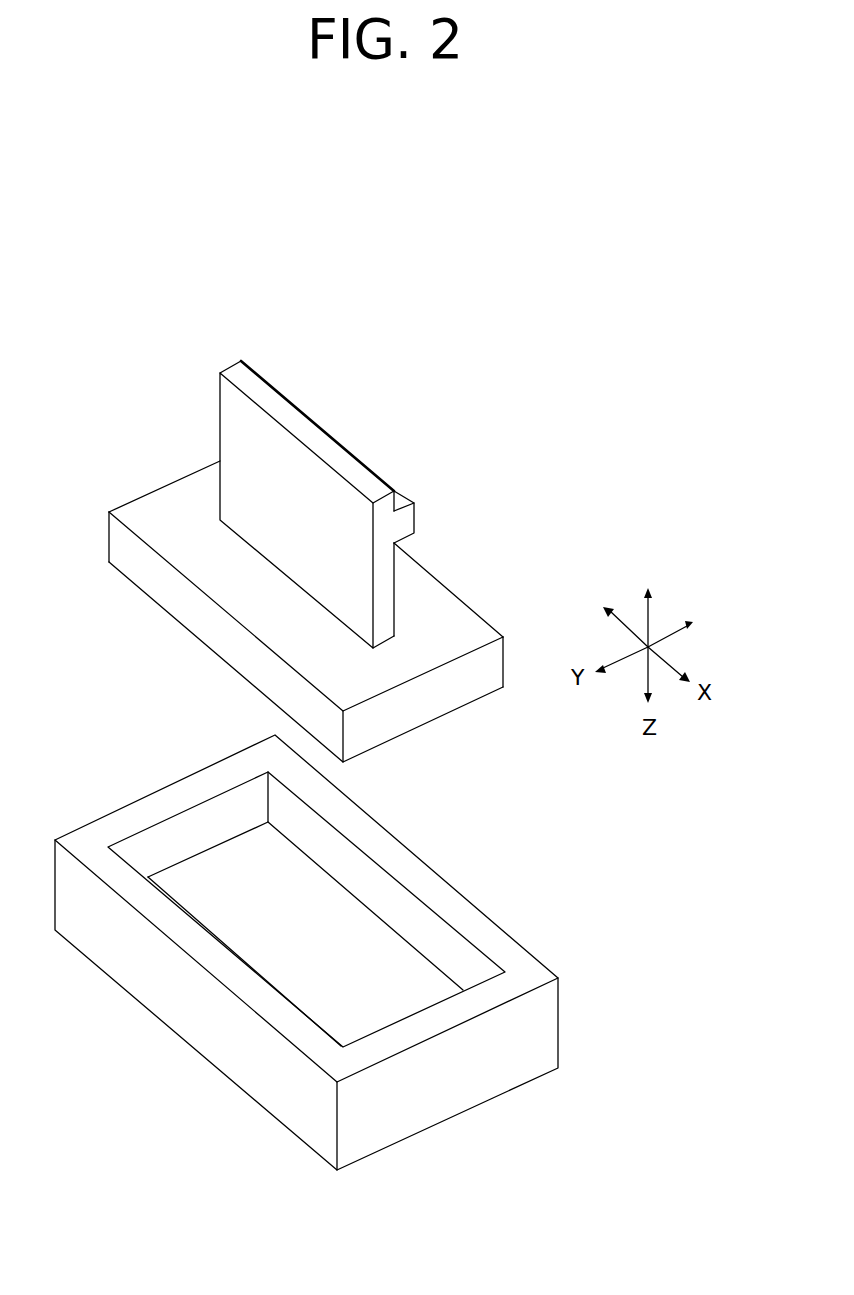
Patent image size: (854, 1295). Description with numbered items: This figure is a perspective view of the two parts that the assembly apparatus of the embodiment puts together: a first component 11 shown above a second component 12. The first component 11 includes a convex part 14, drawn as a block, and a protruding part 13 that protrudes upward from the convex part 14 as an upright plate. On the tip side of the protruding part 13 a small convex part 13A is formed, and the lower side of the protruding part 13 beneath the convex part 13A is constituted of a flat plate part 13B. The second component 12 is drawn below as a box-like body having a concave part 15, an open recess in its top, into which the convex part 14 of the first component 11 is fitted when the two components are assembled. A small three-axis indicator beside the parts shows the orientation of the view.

The base plate 11 is at (467, 601).
The container box 12 is at (482, 910).
The plate member 13 is at (345, 460).
The projection of plate member 13A is at (414, 518).
The edge portion of plate member 13B is at (396, 570).
The side surface of base plate 14 is at (443, 699).
The recess of container box 15 is at (390, 887).